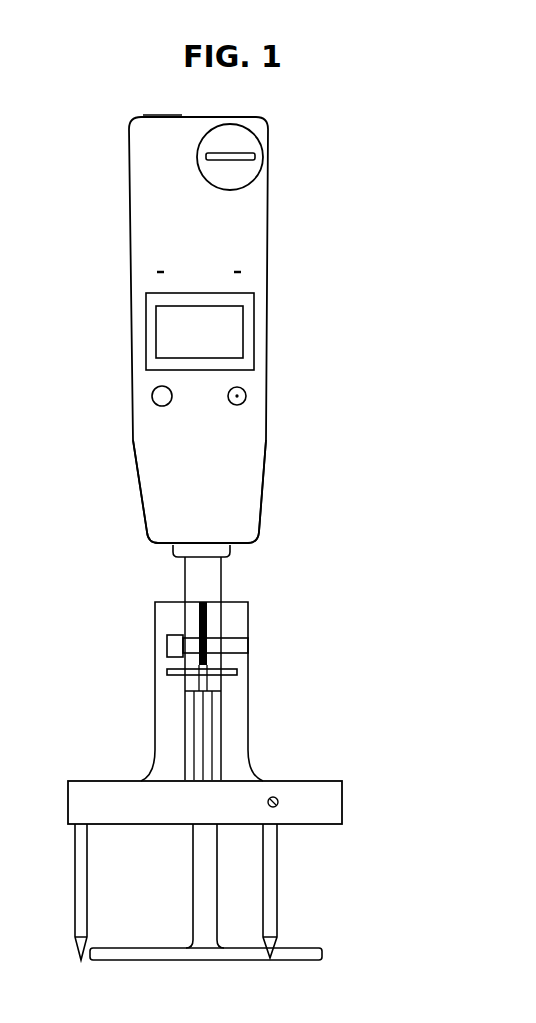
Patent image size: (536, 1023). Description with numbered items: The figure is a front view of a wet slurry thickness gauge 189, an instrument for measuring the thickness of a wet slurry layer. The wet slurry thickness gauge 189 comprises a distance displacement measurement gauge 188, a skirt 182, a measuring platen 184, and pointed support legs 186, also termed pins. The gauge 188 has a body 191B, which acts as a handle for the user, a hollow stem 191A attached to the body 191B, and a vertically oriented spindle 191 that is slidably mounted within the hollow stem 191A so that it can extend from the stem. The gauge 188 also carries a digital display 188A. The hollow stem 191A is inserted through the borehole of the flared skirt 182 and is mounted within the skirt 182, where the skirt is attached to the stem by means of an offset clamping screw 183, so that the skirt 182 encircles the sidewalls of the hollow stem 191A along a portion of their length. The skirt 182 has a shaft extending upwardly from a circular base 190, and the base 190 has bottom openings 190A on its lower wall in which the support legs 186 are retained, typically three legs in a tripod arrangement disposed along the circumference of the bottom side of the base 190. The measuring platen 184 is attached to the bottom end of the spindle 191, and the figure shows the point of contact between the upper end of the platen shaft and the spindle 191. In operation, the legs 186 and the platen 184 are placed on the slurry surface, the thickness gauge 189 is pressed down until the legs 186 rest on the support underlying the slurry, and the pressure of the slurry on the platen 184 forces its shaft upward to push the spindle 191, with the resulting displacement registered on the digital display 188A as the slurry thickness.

The wet slurry thickness gauge 189 is at (296, 222).
The distance displacement measurement gauge 188 is at (138, 442).
The digital display 188A is at (224, 335).
The body 191B is at (257, 450).
The hollow stem 191A is at (208, 578).
The offset clamping screw 183 is at (248, 641).
The skirt 182 is at (245, 720).
The spindle 191 is at (198, 748).
The base 190 is at (315, 780).
The bottom openings 190A is at (280, 800).
The support legs 186 is at (270, 900).
The measuring platen 184 is at (300, 950).